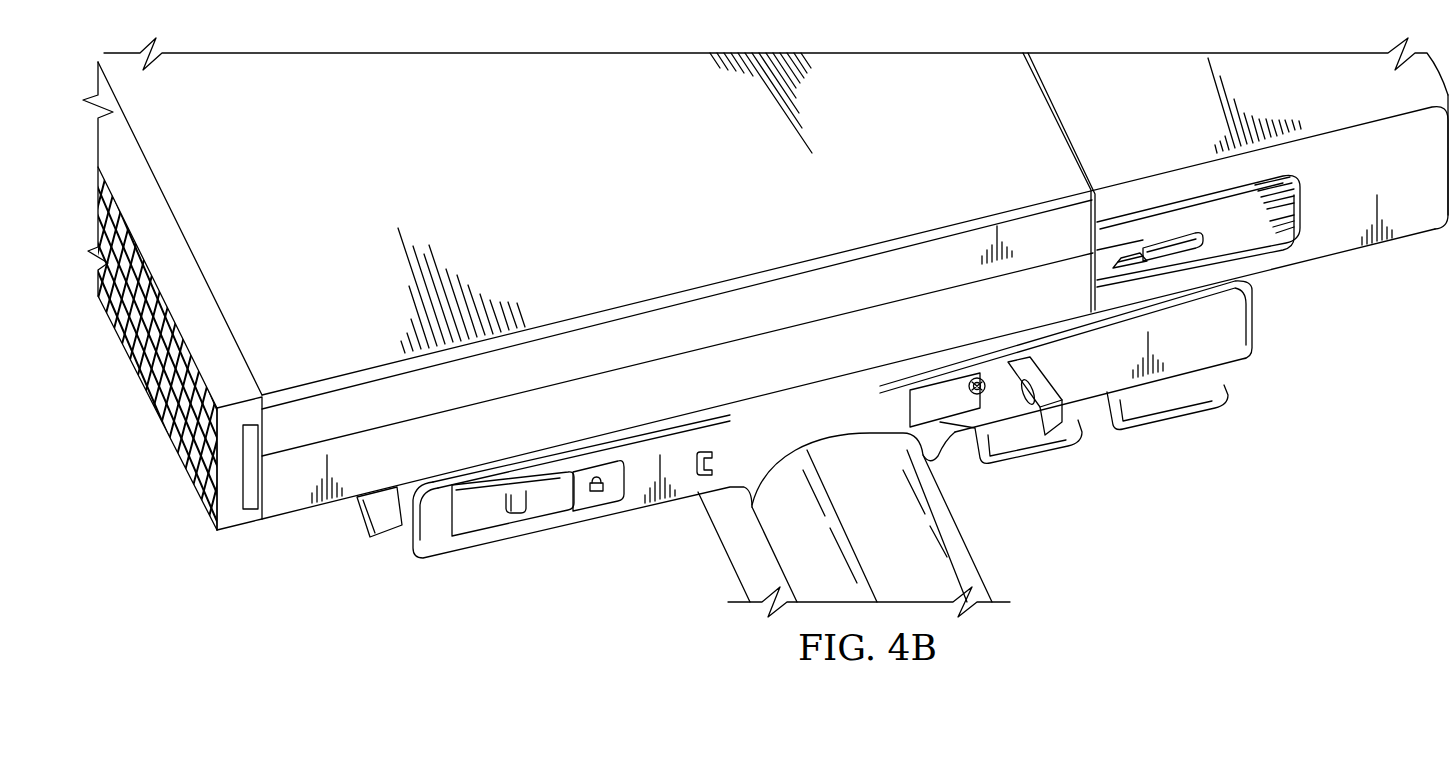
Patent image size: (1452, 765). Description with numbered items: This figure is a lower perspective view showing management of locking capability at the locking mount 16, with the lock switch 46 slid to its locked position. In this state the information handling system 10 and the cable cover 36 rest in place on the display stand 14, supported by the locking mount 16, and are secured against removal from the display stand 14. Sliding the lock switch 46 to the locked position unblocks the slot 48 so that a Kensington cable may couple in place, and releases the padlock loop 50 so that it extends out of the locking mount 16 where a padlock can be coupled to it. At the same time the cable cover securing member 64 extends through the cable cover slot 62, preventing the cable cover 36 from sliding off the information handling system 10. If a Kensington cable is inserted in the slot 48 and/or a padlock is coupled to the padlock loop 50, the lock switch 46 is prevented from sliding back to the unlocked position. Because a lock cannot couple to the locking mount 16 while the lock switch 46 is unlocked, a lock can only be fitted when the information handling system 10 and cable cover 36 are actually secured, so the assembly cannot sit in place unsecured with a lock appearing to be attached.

The information handling system 10 is at (285, 538).
The display stand 14 is at (957, 548).
The locking mount 16 is at (460, 560).
The cable cover 36 is at (1340, 262).
The lock switch 46 is at (519, 547).
The slot 48 is at (714, 457).
The padlock loop 50 is at (1040, 377).
The cable cover slot 62 is at (1178, 236).
The cable cover securing member 64 is at (1148, 260).